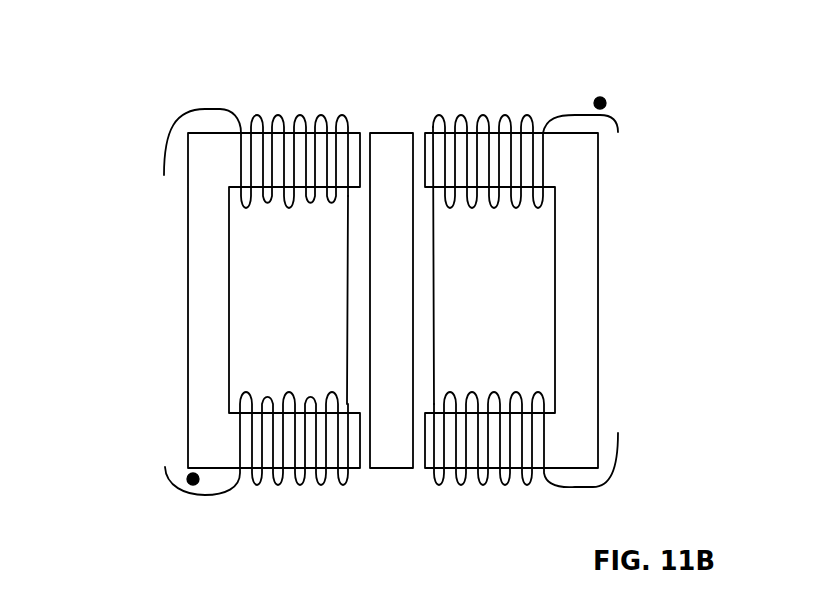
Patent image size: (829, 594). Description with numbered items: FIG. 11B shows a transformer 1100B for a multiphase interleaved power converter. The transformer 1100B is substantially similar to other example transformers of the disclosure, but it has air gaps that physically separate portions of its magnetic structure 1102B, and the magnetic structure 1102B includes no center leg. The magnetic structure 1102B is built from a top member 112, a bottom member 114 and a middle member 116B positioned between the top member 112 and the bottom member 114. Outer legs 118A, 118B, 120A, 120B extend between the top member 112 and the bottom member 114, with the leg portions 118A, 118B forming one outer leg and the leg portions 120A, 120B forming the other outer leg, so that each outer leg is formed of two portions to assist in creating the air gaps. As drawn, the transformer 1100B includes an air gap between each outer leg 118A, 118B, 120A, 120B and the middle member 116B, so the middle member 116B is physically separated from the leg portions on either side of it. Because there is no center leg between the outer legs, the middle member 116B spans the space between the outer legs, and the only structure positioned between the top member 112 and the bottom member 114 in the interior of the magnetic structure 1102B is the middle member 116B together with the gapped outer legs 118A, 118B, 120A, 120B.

The transformer 1100B is at (171, 68).
The magnetic structure 1102B is at (634, 239).
The bottom member 114 is at (200, 315).
The top member 112 is at (580, 307).
The middle member 116B is at (392, 458).
The outer leg 118A is at (300, 175).
The outer leg 118B is at (510, 175).
The outer leg 120A is at (248, 460).
The outer leg 120B is at (538, 458).